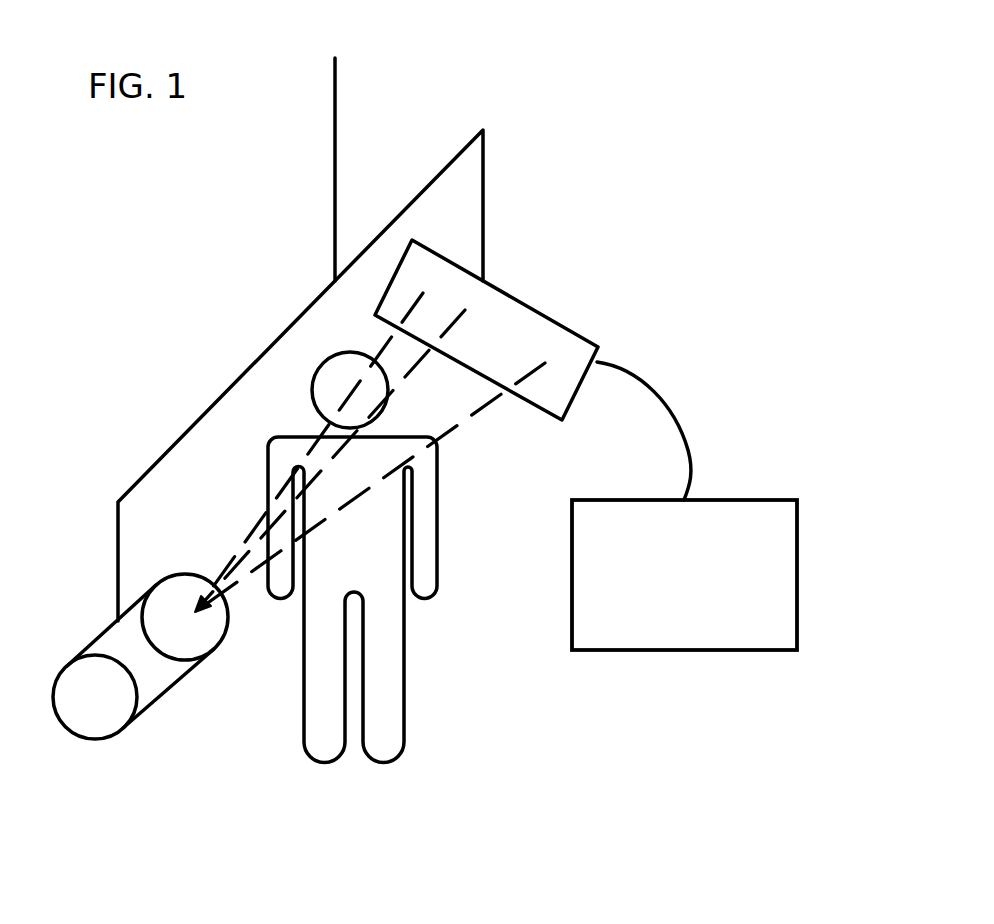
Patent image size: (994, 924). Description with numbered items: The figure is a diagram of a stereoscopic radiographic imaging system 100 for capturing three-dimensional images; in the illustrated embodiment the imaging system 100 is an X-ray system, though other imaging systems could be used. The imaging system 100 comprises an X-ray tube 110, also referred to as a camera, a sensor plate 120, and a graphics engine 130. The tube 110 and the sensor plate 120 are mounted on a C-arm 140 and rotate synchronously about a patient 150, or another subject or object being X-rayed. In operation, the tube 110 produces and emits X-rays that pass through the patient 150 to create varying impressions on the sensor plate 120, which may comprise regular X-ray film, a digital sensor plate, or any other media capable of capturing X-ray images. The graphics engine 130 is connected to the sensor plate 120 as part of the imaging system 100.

The radiographic imaging system 100 is at (144, 320).
The X-ray tube 110 is at (110, 737).
The sensor plate 120 is at (570, 331).
The graphics engine 130 is at (688, 650).
The C-arm 140 is at (492, 143).
The patient 150 is at (388, 688).